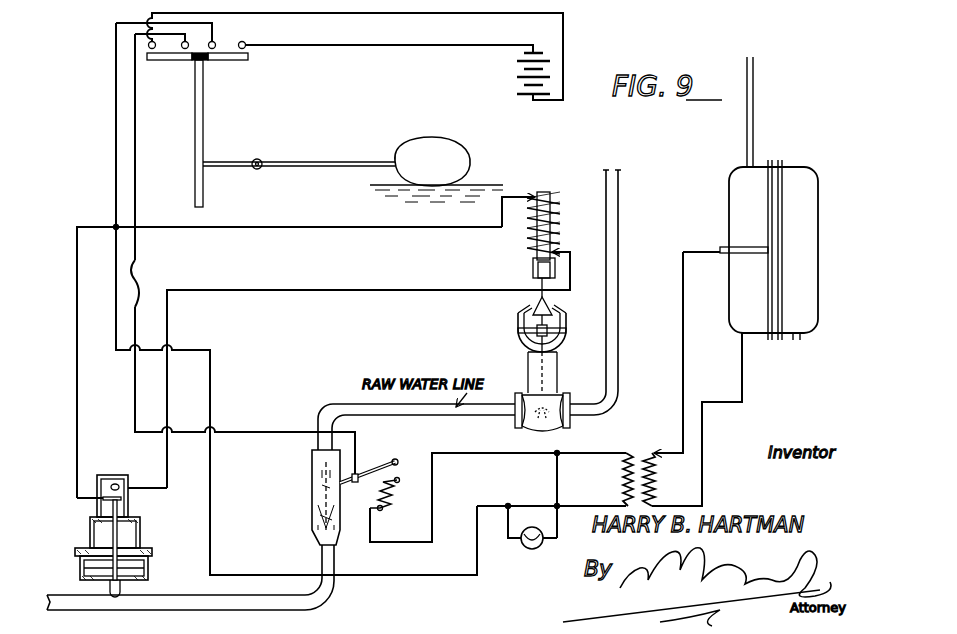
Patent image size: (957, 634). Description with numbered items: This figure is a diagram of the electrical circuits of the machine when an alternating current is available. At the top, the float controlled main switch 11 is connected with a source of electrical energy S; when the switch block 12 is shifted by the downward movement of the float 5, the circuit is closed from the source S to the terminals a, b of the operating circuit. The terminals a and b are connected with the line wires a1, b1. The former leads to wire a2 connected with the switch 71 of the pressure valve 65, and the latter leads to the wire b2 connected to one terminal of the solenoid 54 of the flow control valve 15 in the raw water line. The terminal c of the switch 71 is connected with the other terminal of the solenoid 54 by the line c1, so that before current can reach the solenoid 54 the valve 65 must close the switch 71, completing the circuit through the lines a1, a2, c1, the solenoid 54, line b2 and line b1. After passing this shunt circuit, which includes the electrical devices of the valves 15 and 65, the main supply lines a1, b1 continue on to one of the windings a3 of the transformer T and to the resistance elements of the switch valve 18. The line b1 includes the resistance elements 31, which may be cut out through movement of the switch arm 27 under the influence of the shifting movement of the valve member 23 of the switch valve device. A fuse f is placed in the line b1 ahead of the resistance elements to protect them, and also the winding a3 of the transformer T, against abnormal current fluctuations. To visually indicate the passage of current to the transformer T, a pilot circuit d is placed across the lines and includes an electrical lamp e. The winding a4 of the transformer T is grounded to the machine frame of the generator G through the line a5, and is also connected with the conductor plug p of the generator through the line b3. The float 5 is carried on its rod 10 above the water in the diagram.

The line wire a1 is at (112, 94).
The wire a2 is at (74, 330).
The transformer winding a3 is at (620, 487).
The transformer winding a4 is at (672, 484).
The line a5 is at (706, 405).
The terminal a is at (169, 34).
The terminal b is at (175, 33).
The line wire b1 is at (138, 170).
The wire b2 is at (312, 215).
The line b3 is at (679, 386).
The terminal c is at (118, 485).
The line c1 is at (312, 294).
The pilot circuit d is at (552, 482).
The electrical lamp e is at (540, 547).
The fuse f is at (139, 278).
The conductor plug p is at (724, 247).
The source of electrical energy S is at (511, 73).
The gas generator tank G is at (792, 198).
The transformer T is at (629, 466).
The float 5 is at (412, 156).
The float lever rod 10 is at (195, 138).
The float controlled main switch 11 is at (220, 80).
The switch block 12 is at (180, 62).
The flow control valve 15 is at (521, 354).
The switch valve 18 is at (312, 490).
The valve member 23 is at (320, 528).
The switch arm 27 is at (390, 466).
The resistance elements 31 is at (388, 482).
The solenoid 54 is at (520, 235).
The pressure valve 65 is at (97, 522).
The switch 71 is at (113, 482).